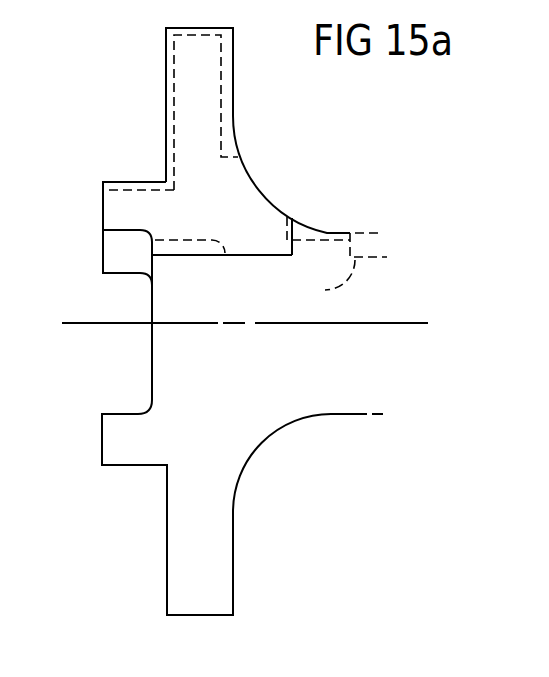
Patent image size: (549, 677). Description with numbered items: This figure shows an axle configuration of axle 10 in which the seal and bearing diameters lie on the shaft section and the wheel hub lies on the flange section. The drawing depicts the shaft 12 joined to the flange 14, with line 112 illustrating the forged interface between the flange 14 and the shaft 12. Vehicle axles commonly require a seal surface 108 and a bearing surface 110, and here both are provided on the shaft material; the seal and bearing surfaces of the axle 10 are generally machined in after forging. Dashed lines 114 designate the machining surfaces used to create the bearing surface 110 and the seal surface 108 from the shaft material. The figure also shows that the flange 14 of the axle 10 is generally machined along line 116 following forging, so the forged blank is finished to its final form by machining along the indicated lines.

The axle 10 is at (318, 462).
The shaft 12 is at (373, 303).
The flange 14 is at (233, 78).
The seal surface 108 is at (325, 229).
The bearing surface 110 is at (382, 253).
The line 112 is at (246, 257).
The dashed lines 114 is at (334, 290).
The line 116 is at (221, 119).